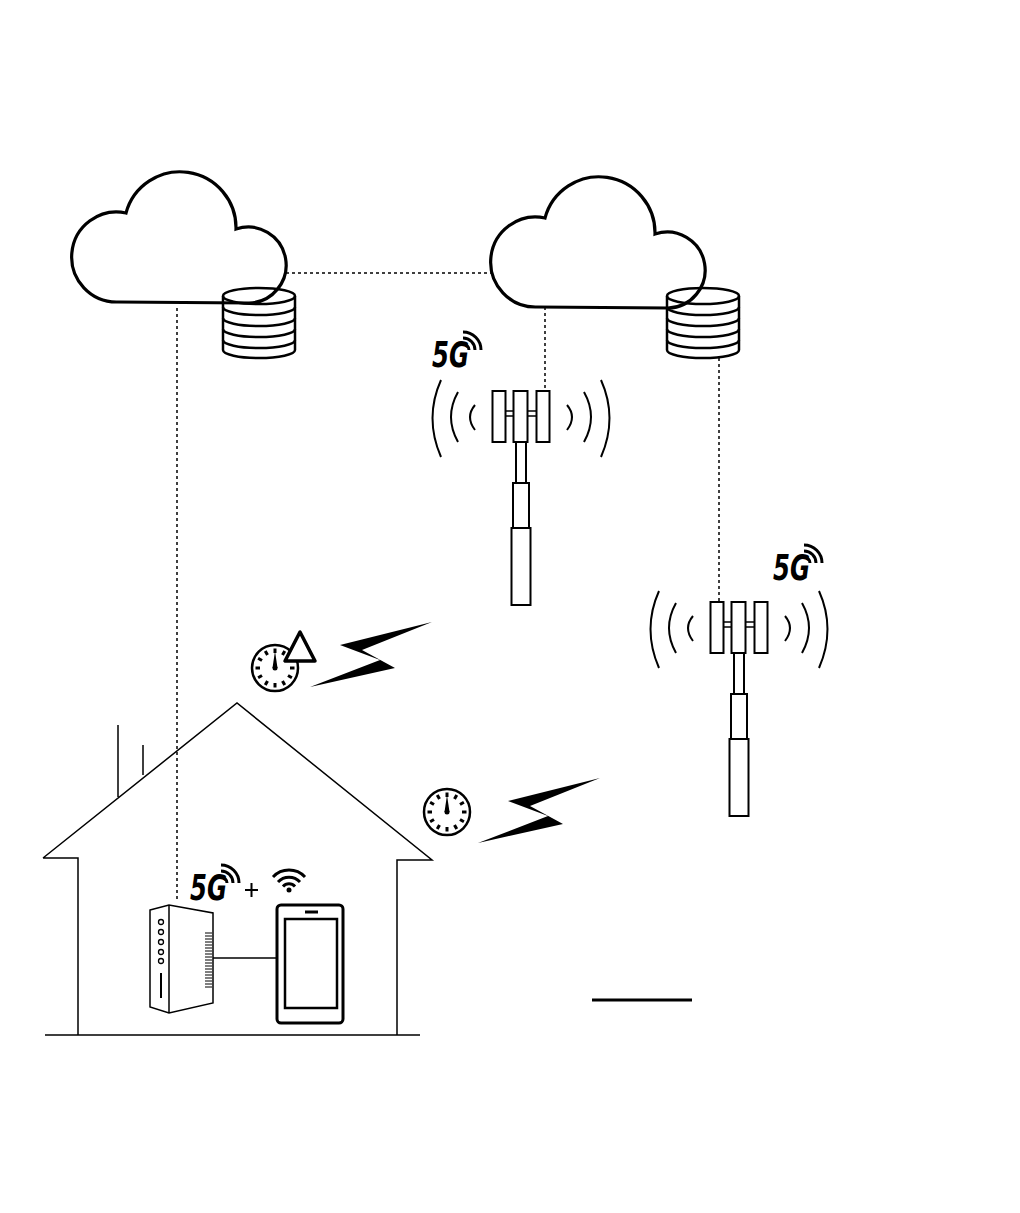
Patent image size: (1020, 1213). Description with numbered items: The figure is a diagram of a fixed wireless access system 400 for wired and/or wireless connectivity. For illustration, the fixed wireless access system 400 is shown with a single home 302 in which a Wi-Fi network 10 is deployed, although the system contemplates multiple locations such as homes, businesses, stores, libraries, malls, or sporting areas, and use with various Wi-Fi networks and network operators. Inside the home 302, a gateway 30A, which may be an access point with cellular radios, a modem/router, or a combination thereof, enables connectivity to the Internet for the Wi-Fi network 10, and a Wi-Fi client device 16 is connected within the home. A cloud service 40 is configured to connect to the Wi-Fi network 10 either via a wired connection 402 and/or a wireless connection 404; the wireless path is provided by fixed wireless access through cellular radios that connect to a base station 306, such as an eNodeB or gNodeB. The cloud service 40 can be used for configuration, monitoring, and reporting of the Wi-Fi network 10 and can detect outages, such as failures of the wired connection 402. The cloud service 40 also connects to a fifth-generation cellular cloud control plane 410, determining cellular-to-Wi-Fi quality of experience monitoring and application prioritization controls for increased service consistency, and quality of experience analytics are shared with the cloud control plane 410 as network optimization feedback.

The fixed wireless access system 400 is at (607, 58).
The cloud service 40 is at (257, 188).
The 5G cloud control plane 410 is at (707, 220).
The wired connection 402 is at (195, 553).
The base station 306 is at (549, 533).
The wireless connection 404 is at (574, 733).
The home 302 is at (384, 748).
The Wi-Fi client device 16 is at (387, 990).
The gateway 30A is at (175, 1035).
The Wi-Fi network 10 is at (252, 823).